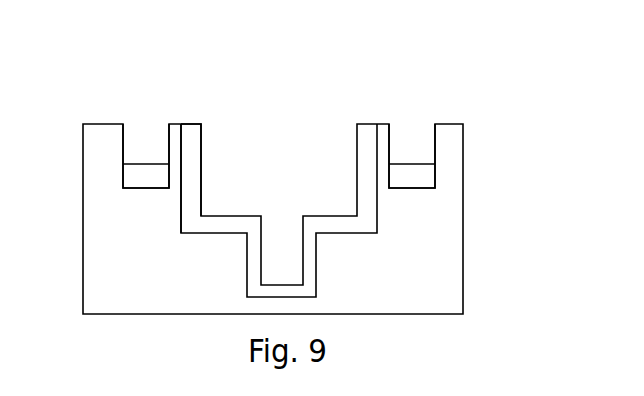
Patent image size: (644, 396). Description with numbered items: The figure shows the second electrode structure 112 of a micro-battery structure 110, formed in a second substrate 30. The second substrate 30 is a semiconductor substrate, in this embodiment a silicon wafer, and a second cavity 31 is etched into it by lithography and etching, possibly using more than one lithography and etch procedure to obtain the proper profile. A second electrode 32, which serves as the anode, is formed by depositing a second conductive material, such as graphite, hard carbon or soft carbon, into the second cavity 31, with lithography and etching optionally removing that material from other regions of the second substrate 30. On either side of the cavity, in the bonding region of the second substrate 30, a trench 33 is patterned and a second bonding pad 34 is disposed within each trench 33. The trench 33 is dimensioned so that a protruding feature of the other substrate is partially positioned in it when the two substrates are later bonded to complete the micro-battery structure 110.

The second substrate 30 is at (453, 247).
The second cavity 31 is at (377, 145).
The second electrode 32 is at (192, 148).
The trench 33 is at (145, 133).
The second bonding pad 34 is at (129, 176).
The micro-battery structure 110 is at (571, 394).
The second electrode structure 112 is at (535, 100).